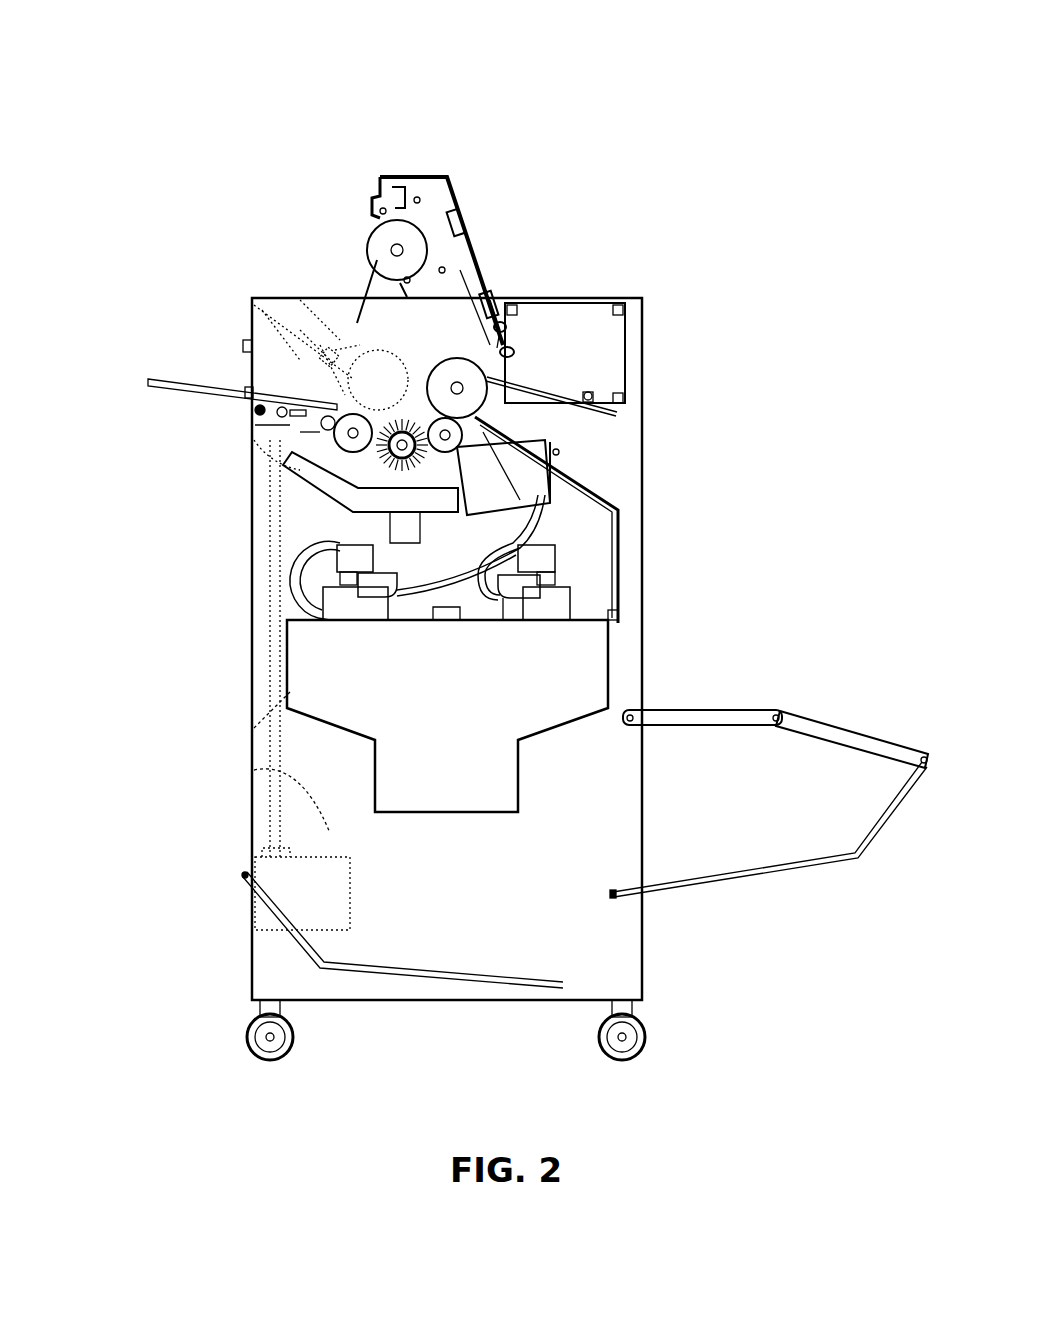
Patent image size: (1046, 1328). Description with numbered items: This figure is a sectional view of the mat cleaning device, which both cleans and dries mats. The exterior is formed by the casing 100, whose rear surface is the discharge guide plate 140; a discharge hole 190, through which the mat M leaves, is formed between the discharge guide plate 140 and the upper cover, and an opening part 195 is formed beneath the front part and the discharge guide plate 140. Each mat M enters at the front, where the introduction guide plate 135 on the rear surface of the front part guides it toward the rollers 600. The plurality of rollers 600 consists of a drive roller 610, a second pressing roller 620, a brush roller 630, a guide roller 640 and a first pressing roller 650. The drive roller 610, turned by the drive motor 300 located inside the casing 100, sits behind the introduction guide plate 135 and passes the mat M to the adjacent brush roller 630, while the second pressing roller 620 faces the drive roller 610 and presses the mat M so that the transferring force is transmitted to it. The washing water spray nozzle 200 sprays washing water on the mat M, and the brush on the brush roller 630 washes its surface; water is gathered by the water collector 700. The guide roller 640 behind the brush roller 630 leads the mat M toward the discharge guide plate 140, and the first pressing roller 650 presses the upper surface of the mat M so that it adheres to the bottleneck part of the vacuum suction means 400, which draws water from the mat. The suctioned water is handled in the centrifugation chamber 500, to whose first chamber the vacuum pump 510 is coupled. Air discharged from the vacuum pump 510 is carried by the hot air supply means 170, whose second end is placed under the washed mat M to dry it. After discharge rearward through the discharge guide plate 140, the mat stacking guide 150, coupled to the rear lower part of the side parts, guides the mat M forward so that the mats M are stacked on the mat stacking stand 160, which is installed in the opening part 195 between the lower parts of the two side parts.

The casing 100 is at (252, 352).
The mat M is at (178, 380).
The introduction guide plate 135 is at (300, 430).
The washing water spray nozzle 200 is at (252, 477).
The water collector 700 is at (300, 518).
The rollers 600 is at (505, 65).
The drive roller 610 is at (275, 355).
The second pressing roller 620 is at (355, 330).
The brush roller 630 is at (330, 370).
The guide roller 640 is at (445, 295).
The first pressing roller 650 is at (500, 335).
The discharge hole 190 is at (602, 437).
The discharge guide plate 140 is at (605, 485).
The hot air supply means 170 is at (570, 525).
The vacuum suction means 400 is at (560, 560).
The drive motor 300 is at (273, 572).
The vacuum pump 510 is at (357, 605).
The centrifugation chamber 500 is at (610, 660).
The opening part 195 is at (330, 833).
The mat stacking stand 160 is at (300, 950).
The mat stacking guide 150 is at (757, 870).